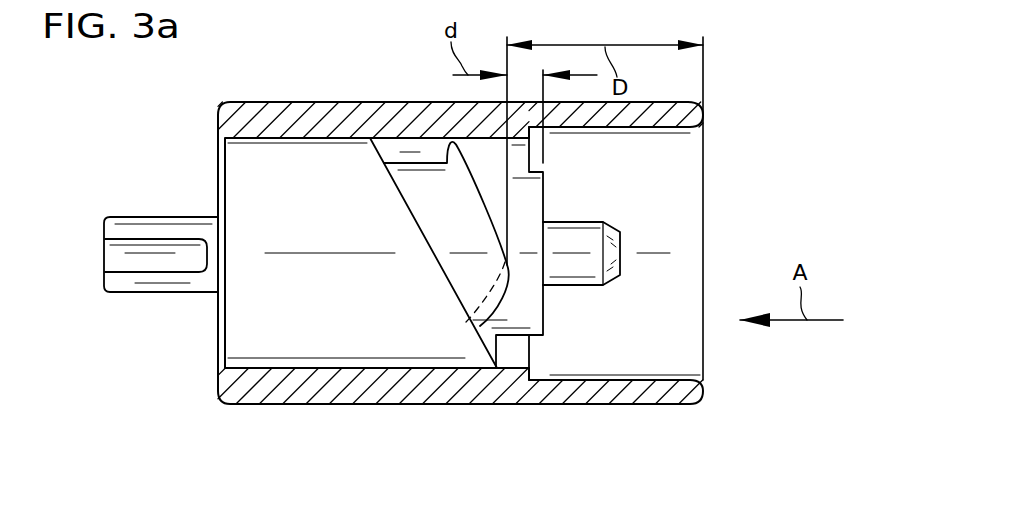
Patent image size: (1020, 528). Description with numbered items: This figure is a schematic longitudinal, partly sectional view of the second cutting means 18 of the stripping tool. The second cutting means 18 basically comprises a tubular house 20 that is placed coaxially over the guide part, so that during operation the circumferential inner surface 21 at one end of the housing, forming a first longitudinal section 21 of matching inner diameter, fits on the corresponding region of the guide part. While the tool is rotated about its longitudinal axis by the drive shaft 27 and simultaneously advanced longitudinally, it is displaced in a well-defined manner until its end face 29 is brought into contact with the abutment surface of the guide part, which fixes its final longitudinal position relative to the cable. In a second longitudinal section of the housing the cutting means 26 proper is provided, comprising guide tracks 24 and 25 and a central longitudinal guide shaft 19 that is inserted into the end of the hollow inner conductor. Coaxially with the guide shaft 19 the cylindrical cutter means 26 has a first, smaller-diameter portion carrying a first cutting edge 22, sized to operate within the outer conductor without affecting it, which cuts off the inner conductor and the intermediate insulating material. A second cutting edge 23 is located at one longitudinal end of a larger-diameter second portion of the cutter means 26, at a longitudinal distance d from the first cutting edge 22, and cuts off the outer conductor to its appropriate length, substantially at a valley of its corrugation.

The second cutting means 18 is at (745, 124).
The central longitudinal guide shaft 19 is at (580, 282).
The tubular house 20 is at (245, 122).
The first longitudinal section 21 is at (670, 127).
The first cutting edge 22 is at (545, 265).
The second cutting edge 23 is at (480, 325).
The guide track 24 is at (428, 178).
The guide track 25 is at (515, 303).
The cylindrical cutter means 26 is at (268, 344).
The drive shaft 27 is at (120, 287).
The end face 29 is at (703, 385).